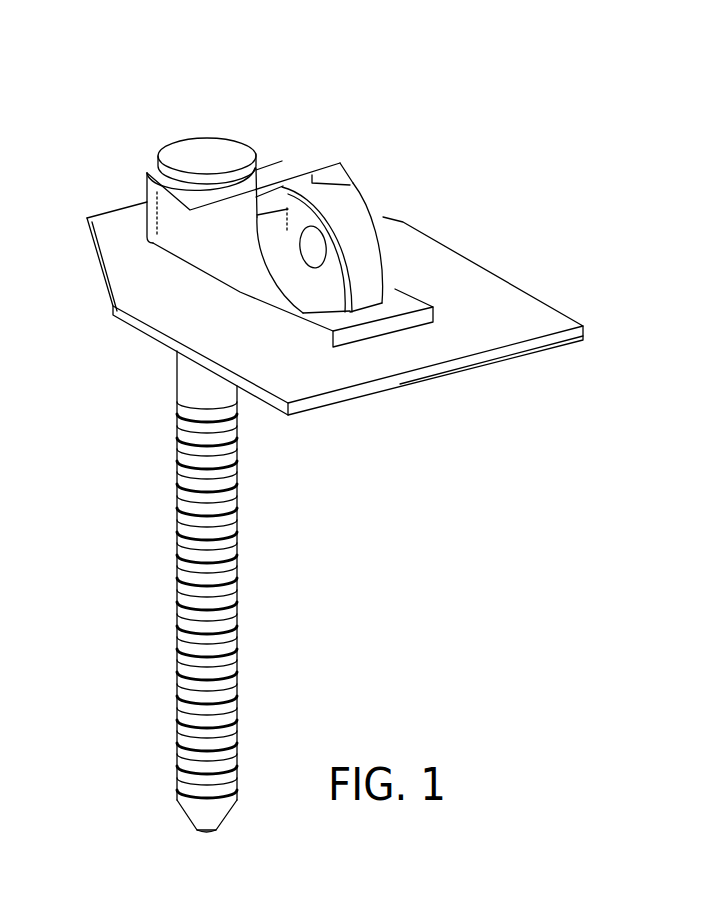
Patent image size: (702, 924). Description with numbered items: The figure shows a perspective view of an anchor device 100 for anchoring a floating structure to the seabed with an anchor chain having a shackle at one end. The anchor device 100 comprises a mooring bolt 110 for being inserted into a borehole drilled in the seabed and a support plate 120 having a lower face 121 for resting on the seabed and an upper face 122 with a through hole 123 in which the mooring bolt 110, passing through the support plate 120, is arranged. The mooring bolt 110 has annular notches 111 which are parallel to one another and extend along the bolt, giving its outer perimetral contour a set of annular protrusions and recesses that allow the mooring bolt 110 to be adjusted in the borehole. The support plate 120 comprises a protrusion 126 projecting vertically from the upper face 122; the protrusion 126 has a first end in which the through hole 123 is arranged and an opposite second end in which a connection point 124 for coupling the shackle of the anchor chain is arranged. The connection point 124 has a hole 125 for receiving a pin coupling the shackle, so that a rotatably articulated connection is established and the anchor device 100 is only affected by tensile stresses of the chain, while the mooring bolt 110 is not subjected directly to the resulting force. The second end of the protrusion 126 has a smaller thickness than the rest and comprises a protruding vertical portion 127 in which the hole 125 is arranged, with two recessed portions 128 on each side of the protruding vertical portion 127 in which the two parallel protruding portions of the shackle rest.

The anchor device 100 is at (302, 137).
The mooring bolt 110 is at (205, 390).
The annular notches 111 is at (200, 665).
The support plate 120 is at (522, 349).
The lower face 121 is at (483, 365).
The upper face 122 is at (490, 310).
The through hole 123 is at (153, 168).
The connection point 124 is at (355, 218).
The hole 125 is at (313, 248).
The protrusion 126 is at (212, 232).
The protruding vertical portion 127 is at (330, 277).
The recessed portions 128 is at (272, 252).